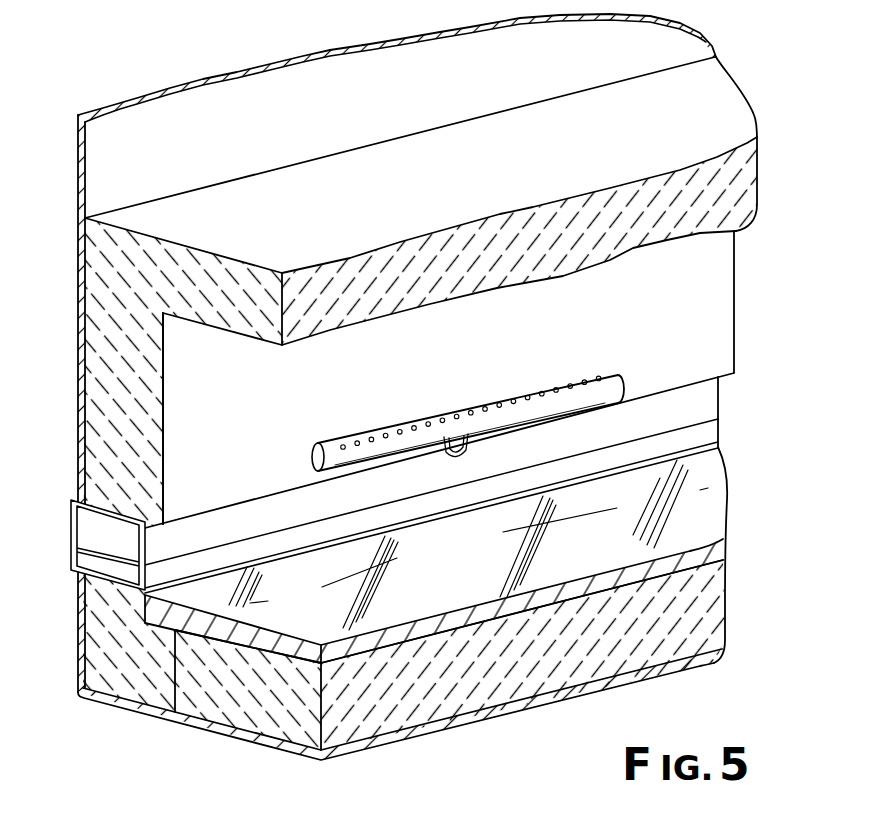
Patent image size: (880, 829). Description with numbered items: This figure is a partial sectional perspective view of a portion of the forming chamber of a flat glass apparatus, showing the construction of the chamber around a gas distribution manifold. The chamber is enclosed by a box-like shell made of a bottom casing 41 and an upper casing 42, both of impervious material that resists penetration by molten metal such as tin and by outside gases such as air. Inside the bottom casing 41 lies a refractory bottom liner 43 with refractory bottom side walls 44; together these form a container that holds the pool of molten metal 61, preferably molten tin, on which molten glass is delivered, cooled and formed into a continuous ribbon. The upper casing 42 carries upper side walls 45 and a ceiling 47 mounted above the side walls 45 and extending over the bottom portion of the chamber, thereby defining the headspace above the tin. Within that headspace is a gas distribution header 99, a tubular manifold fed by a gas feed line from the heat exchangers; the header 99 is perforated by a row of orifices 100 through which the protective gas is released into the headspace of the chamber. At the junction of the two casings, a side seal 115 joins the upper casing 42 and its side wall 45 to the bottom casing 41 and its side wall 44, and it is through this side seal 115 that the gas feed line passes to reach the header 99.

The bottom casing 41 is at (680, 664).
The upper casing 42 is at (694, 31).
The bottom liner 43 is at (725, 600).
The bottom side walls 44 is at (102, 593).
The upper side walls 45 is at (735, 302).
The ceiling 47 is at (749, 181).
The pool of molten metal 61 is at (716, 550).
The gas distribution header 99 is at (623, 386).
The orifices 100 is at (597, 377).
The side seal 115 is at (70, 522).